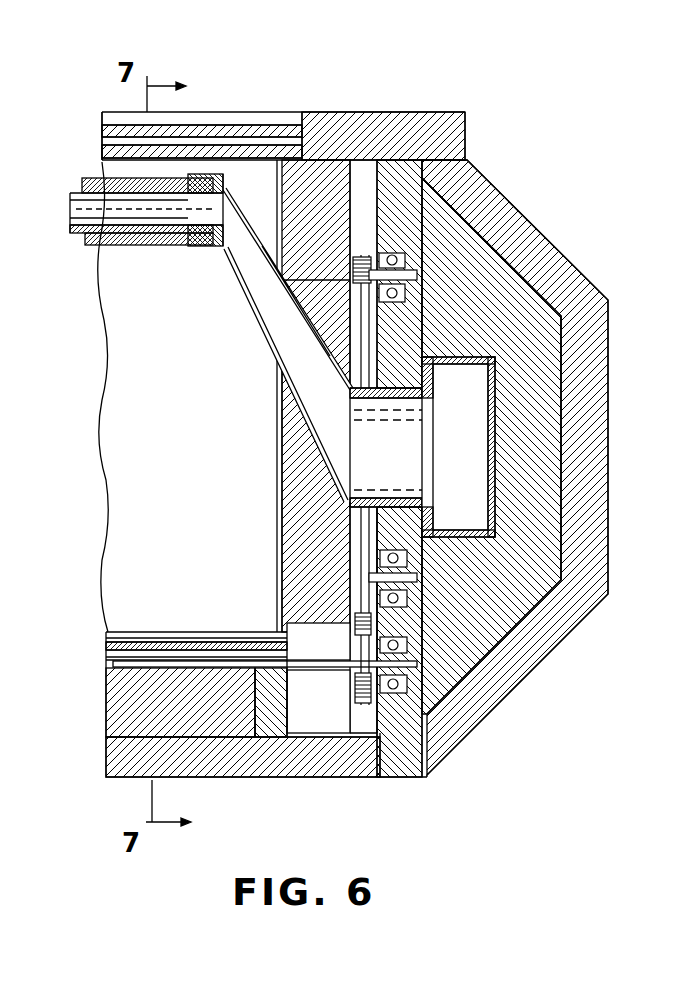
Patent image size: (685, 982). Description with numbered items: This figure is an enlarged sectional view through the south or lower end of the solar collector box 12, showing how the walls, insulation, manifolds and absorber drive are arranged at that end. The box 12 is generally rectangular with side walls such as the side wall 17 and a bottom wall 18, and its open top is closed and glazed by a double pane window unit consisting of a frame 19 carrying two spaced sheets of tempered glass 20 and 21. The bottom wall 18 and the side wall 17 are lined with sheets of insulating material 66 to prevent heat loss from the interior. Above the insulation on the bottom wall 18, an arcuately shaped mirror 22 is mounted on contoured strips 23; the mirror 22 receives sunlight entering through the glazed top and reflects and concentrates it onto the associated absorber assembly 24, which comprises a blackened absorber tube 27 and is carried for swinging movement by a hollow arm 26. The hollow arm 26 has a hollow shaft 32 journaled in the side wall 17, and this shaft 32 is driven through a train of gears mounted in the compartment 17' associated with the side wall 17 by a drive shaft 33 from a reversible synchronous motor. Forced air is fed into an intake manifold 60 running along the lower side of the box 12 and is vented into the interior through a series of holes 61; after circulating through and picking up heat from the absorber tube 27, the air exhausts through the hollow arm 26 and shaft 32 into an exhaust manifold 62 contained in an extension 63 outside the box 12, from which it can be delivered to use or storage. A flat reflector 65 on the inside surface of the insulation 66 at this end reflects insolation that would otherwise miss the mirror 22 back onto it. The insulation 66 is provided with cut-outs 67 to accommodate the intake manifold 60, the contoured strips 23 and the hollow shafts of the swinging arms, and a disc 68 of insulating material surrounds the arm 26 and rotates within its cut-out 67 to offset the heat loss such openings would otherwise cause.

The collector box 12 is at (569, 100).
The side wall 17 is at (469, 425).
The compartment 17' is at (342, 402).
The bottom wall 18 is at (106, 767).
The frame 19 is at (362, 120).
The tempered glass sheet 20 is at (244, 124).
The tempered glass sheet 21 is at (102, 152).
The arcuately shaped mirror 22 is at (134, 632).
The contoured strip 23 is at (264, 737).
The absorber assembly 24 is at (74, 256).
The hollow arm 26 is at (260, 325).
The absorber tube 27 is at (77, 197).
The hollow shaft 32 is at (407, 400).
The drive shaft 33 is at (118, 668).
The intake manifold 60 is at (329, 711).
The hole 61 is at (280, 632).
The exhaust manifold 62 is at (471, 466).
The extension 63 is at (606, 374).
The flat reflector 65 is at (281, 512).
The insulating material 66 is at (300, 220).
The cut-out 67 is at (333, 275).
The insulating disc 68 is at (300, 466).